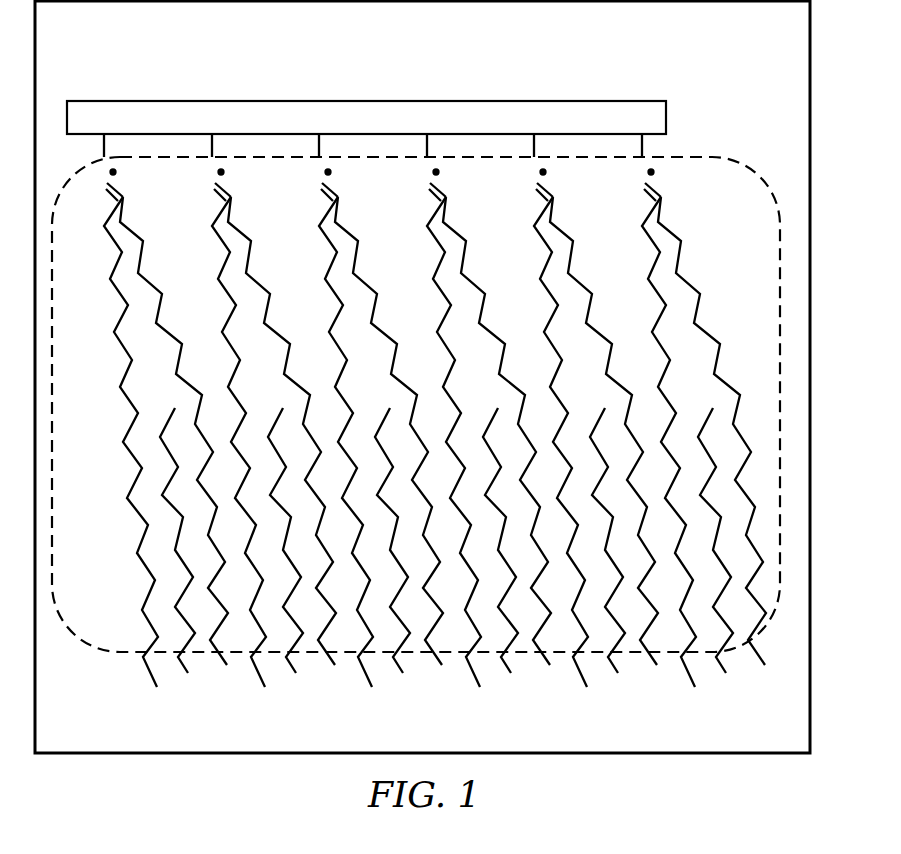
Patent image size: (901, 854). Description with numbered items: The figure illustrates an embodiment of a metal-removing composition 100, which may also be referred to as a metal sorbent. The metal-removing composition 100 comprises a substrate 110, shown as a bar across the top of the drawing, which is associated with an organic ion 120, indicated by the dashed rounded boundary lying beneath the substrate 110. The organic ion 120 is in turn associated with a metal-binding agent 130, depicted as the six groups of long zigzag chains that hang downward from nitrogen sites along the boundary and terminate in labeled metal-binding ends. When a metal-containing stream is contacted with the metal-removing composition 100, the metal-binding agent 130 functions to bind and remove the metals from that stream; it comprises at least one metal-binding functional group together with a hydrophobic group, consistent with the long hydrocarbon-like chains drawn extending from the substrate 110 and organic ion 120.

The metal-removing composition 100 is at (80, 28).
The substrate 110 is at (512, 103).
The organic ion 120 is at (665, 157).
The metal-binding agent 130 is at (618, 695).